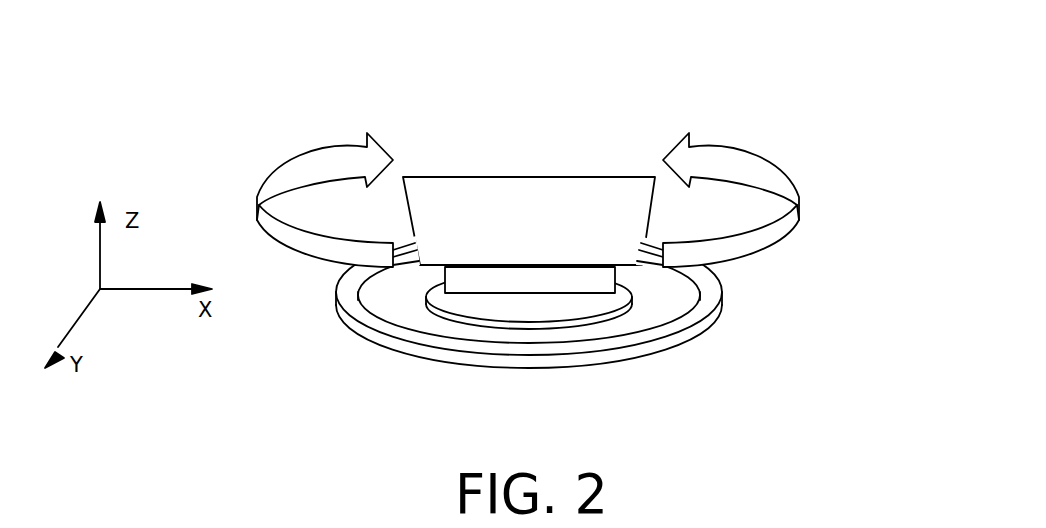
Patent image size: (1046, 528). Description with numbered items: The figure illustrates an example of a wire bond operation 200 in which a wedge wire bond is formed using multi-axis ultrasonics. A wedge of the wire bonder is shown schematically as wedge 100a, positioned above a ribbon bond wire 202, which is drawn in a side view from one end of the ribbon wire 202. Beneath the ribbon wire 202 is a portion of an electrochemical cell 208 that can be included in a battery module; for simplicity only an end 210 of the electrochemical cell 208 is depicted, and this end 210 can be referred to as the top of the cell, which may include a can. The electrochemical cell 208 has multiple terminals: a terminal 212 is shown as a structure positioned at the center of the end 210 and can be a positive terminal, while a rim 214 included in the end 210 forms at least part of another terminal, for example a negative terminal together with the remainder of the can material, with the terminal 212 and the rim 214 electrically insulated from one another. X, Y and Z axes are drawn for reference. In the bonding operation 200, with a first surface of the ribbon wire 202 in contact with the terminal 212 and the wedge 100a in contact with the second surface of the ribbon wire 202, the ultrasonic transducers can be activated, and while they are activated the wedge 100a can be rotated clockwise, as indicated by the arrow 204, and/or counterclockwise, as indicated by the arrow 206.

The wire bond operation 200 is at (895, 72).
The wedge 100a is at (555, 231).
The ribbon bond wire 202 is at (548, 291).
The arrow 204 is at (310, 150).
The arrow 206 is at (740, 150).
The electrochemical cell 208 is at (336, 307).
The end of the electrochemical cell 210 is at (324, 280).
The terminal 212 is at (449, 315).
The rim 214 is at (722, 346).